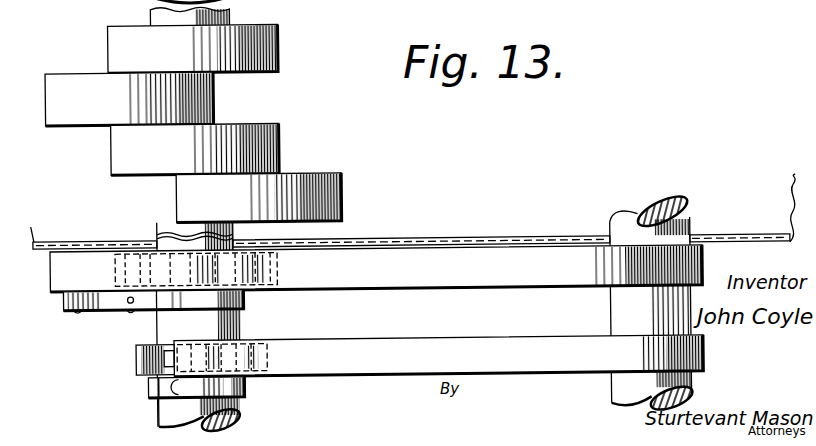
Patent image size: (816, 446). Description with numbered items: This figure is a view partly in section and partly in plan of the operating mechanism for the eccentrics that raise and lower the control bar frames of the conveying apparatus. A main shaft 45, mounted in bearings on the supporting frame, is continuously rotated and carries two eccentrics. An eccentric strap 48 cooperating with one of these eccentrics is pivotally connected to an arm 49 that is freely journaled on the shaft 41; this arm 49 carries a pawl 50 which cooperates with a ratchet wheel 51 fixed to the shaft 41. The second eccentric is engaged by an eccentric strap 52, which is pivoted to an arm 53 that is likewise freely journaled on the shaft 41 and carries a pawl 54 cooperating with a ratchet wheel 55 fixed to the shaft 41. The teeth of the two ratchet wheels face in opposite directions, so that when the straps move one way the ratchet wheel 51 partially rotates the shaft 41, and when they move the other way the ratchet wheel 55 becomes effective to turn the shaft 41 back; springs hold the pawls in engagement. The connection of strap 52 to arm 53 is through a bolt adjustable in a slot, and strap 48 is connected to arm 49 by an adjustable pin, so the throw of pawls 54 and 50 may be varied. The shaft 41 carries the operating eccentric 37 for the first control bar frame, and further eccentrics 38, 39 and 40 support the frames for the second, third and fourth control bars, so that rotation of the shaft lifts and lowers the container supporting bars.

The operating eccentric 37 is at (259, 198).
The eccentric 38 is at (195, 149).
The eccentric 39 is at (129, 99).
The eccentric 40 is at (193, 48).
The shaft 41 is at (243, 412).
The main shaft 45 is at (627, 319).
The eccentric strap 48 is at (376, 268).
The arm 49 is at (153, 319).
The pawl 50 is at (138, 242).
The ratchet wheel 51 is at (278, 272).
The eccentric strap 52 is at (438, 357).
The arm 53 is at (157, 391).
The pawl 54 is at (143, 385).
The ratchet wheel 55 is at (138, 361).